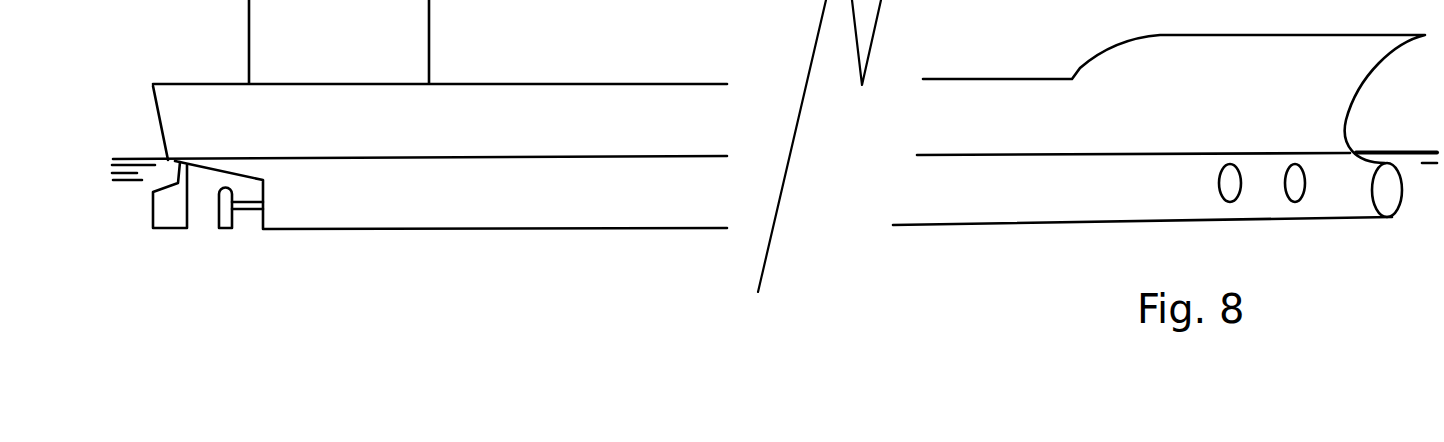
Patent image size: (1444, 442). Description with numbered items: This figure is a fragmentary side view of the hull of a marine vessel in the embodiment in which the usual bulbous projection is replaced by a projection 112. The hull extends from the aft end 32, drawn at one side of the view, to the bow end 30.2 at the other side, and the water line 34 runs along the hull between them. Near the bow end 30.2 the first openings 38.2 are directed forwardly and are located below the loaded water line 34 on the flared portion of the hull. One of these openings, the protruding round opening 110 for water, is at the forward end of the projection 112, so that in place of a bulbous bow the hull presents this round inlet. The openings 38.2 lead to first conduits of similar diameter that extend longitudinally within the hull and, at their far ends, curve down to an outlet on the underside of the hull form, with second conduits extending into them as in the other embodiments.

The aft end 32 is at (197, 135).
The water line 34 is at (403, 160).
The bow end 30.2 is at (1329, 60).
The protruding round opening 110 is at (1386, 195).
The projection 112 is at (1325, 195).
The first openings 38.2 is at (1225, 188).